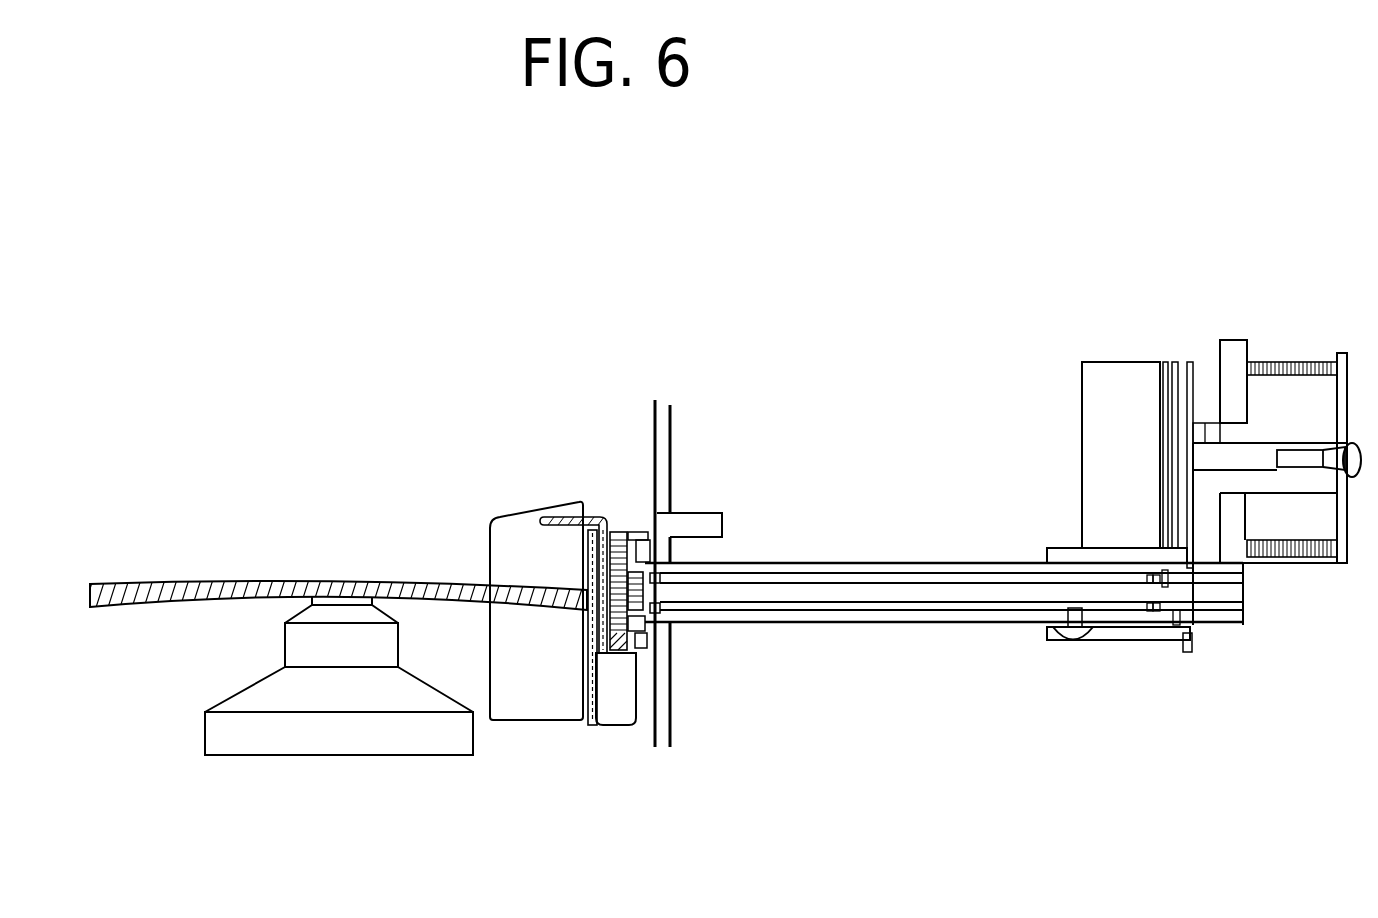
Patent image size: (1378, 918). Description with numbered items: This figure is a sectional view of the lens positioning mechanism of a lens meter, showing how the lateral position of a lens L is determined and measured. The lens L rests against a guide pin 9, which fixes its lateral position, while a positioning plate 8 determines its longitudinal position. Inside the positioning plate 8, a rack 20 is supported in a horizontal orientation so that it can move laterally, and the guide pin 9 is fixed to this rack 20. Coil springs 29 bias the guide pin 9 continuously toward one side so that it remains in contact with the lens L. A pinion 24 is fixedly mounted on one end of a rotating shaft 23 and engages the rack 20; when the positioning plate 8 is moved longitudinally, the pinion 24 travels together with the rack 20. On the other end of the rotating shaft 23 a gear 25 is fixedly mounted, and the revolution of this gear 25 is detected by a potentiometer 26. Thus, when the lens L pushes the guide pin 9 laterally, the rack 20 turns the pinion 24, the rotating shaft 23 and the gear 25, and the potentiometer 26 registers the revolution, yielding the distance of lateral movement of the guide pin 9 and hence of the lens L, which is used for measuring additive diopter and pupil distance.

The lens L is at (215, 585).
The guide pin 9 is at (492, 556).
The pinion 24 is at (625, 527).
The rack 20 is at (620, 648).
The positioning plate 8 is at (612, 717).
The rotating shaft 23 is at (820, 593).
The potentiometer 26 is at (1100, 412).
The gear 25 is at (1237, 353).
The coil springs 29 is at (1293, 355).